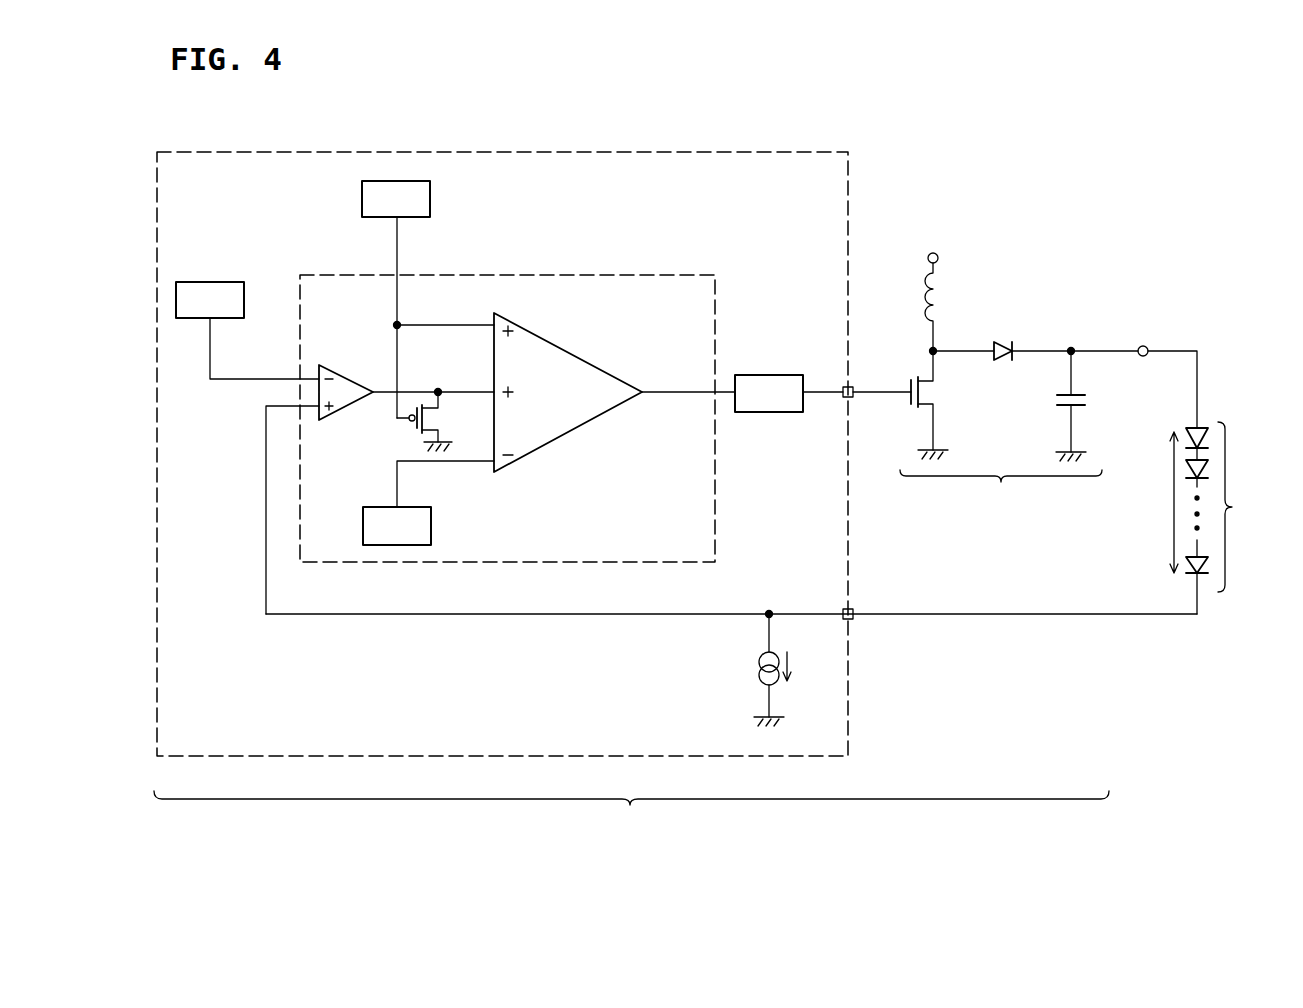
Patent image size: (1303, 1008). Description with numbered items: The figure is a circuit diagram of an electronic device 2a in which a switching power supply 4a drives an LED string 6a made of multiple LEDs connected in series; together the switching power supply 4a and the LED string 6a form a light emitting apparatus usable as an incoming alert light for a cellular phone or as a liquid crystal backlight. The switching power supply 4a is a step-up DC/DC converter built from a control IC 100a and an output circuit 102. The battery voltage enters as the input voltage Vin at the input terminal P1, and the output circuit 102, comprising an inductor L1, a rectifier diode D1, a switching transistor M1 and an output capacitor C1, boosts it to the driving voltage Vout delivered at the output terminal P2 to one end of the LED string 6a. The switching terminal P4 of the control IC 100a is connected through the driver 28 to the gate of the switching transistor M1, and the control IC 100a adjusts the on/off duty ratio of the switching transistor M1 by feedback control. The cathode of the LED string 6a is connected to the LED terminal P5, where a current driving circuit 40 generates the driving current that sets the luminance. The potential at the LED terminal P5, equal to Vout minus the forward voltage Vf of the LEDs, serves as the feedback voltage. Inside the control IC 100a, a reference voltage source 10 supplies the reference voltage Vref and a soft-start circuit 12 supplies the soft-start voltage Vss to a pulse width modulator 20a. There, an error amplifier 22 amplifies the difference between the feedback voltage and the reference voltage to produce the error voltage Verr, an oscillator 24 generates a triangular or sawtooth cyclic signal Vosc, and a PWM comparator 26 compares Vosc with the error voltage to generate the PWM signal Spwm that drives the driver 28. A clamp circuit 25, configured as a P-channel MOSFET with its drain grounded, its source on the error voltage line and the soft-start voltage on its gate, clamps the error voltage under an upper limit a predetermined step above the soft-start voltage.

The electronic device 2a is at (709, 514).
The switching power supply 4a is at (631, 813).
The LED string 6a is at (1206, 518).
The reference voltage source 10 is at (222, 282).
The soft-start circuit 12 is at (435, 199).
The pulse width modulator 20a is at (638, 275).
The error amplifier 22 is at (346, 369).
The oscillator 24 is at (440, 527).
The clamp circuit 25 is at (445, 418).
The PWM comparator 26 is at (556, 345).
The driver 28 is at (772, 375).
The current driving circuit 40 is at (757, 668).
The control IC 100a is at (852, 737).
The output circuit 102 is at (1025, 371).
The input terminal P1 is at (940, 258).
The output terminal P2 is at (1147, 347).
The switching terminal P4 is at (855, 399).
The LED terminal P5 is at (855, 620).
The inductor L1 is at (941, 297).
The switching transistor M1 is at (940, 391).
The rectifier diode D1 is at (1006, 362).
The output capacitor C1 is at (1090, 400).